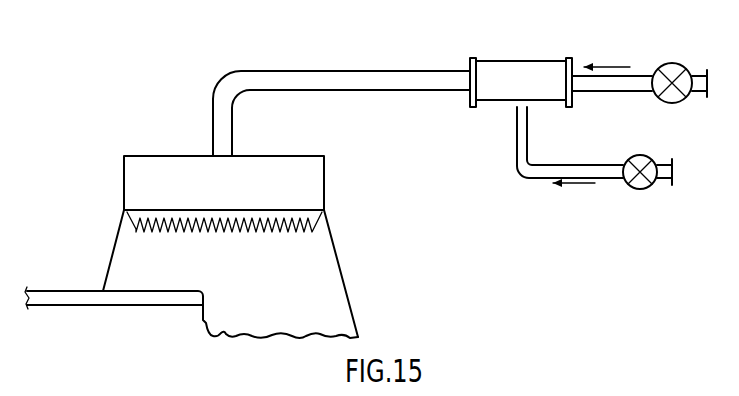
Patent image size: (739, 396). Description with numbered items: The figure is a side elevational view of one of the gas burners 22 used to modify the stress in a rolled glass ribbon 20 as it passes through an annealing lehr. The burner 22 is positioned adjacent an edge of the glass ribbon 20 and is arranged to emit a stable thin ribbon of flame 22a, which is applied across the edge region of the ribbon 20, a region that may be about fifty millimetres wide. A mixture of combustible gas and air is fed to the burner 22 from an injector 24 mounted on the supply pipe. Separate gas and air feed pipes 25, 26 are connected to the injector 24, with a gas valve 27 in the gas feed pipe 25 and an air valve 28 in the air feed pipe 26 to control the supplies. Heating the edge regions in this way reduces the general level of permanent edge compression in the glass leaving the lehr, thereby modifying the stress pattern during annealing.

The glass ribbon 20 is at (52, 290).
The gas burner 22 is at (324, 180).
The ribbon of flame 22a is at (327, 292).
The injector 24 is at (508, 61).
The gas feed pipe 25 is at (515, 140).
The air feed pipe 26 is at (639, 73).
The gas valve 27 is at (637, 190).
The air valve 28 is at (677, 63).